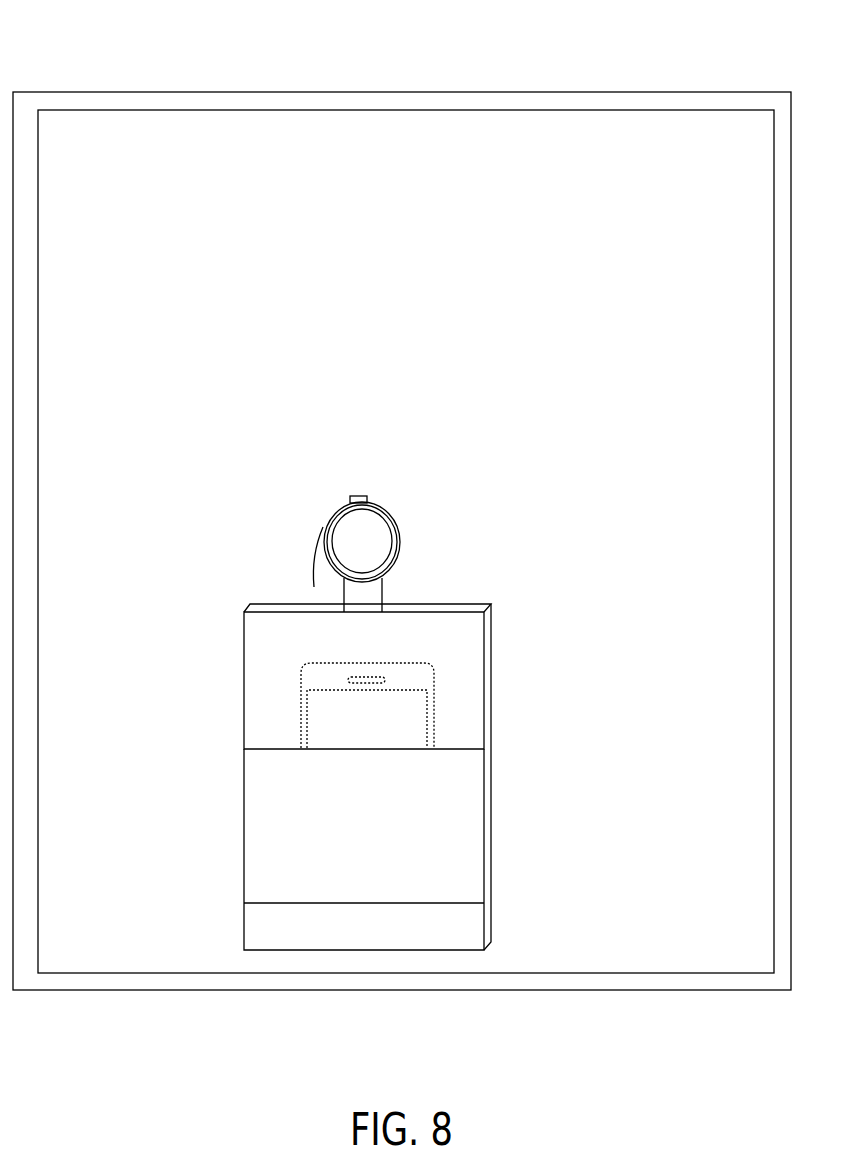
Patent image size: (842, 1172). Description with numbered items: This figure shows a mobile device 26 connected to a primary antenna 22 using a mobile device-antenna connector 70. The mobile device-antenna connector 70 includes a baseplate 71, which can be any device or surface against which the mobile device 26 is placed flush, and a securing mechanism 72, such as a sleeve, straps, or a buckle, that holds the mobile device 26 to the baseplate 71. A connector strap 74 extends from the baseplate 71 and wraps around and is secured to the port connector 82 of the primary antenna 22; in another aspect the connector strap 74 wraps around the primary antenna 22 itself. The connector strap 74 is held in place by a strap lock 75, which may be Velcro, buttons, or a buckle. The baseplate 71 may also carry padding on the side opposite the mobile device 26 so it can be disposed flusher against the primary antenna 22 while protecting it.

The primary antenna 22 is at (245, 92).
The mobile device 26 is at (300, 727).
The mobile device-antenna connector 70 is at (397, 690).
The baseplate 71 is at (493, 718).
The securing mechanism 72 is at (447, 832).
The connector strap 74 is at (315, 567).
The strap lock 75 is at (358, 495).
The port connector 82 is at (358, 542).